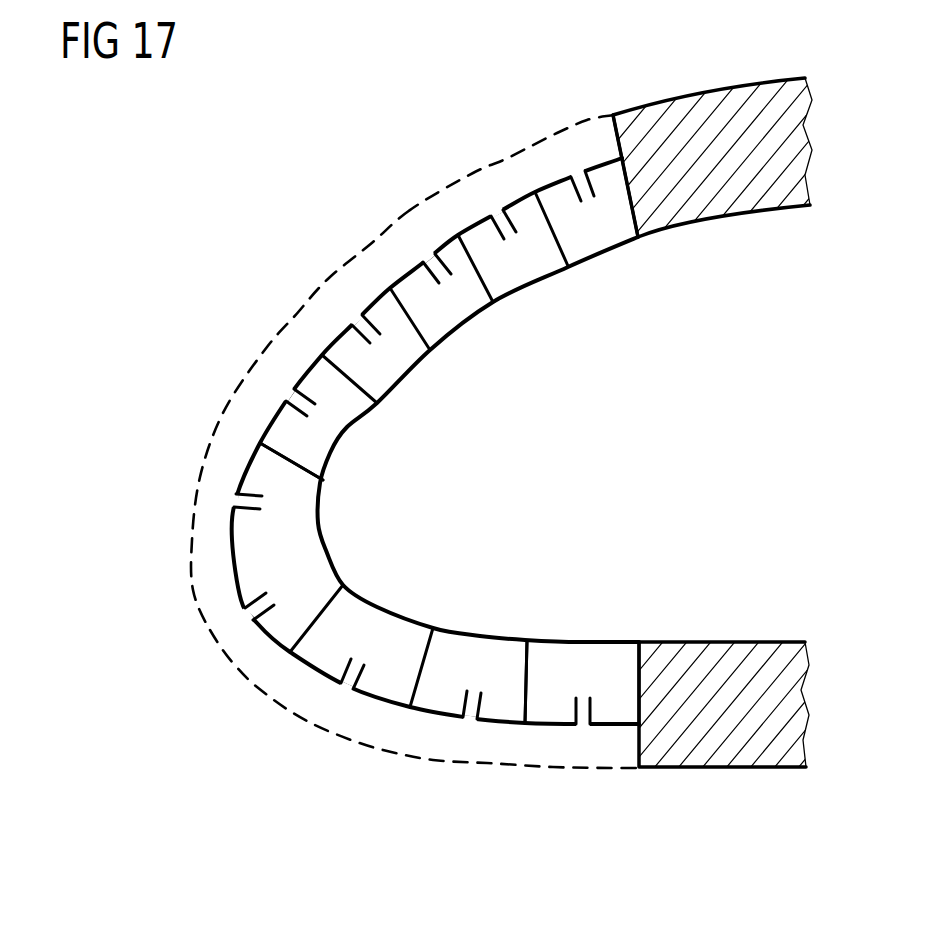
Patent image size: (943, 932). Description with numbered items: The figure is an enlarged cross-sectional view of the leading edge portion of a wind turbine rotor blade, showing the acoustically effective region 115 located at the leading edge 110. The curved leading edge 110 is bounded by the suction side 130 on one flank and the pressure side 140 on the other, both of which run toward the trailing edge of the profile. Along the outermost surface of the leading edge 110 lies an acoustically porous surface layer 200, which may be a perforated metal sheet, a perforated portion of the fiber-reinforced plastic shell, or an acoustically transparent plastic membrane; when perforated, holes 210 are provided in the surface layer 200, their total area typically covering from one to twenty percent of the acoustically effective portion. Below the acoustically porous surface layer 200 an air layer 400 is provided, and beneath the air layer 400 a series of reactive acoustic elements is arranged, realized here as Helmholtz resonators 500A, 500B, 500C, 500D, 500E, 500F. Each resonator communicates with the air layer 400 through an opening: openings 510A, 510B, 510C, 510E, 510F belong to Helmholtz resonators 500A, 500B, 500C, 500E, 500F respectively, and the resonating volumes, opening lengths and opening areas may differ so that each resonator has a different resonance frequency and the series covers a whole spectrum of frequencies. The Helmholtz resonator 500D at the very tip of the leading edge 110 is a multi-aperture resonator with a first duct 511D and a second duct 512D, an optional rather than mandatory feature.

The leading edge 110 is at (196, 165).
The acoustically effective region 115 is at (146, 423).
The suction side 130 is at (738, 105).
The pressure side 140 is at (738, 750).
The acoustically porous surface layer 200 is at (495, 175).
The holes 210 is at (312, 291).
The air layer 400 is at (330, 714).
The Helmholtz resonator 500A is at (602, 232).
The Helmholtz resonator 500B is at (458, 317).
The Helmholtz resonator 500C is at (347, 427).
The Helmholtz resonator 500D is at (320, 530).
The Helmholtz resonator 500E is at (478, 645).
The Helmholtz resonator 500F is at (590, 652).
The opening 510A is at (578, 170).
The opening 510B is at (426, 258).
The opening 510C is at (288, 394).
The first duct 511D is at (238, 500).
The second duct 512D is at (257, 610).
The opening 510E is at (467, 712).
The opening 510F is at (580, 712).